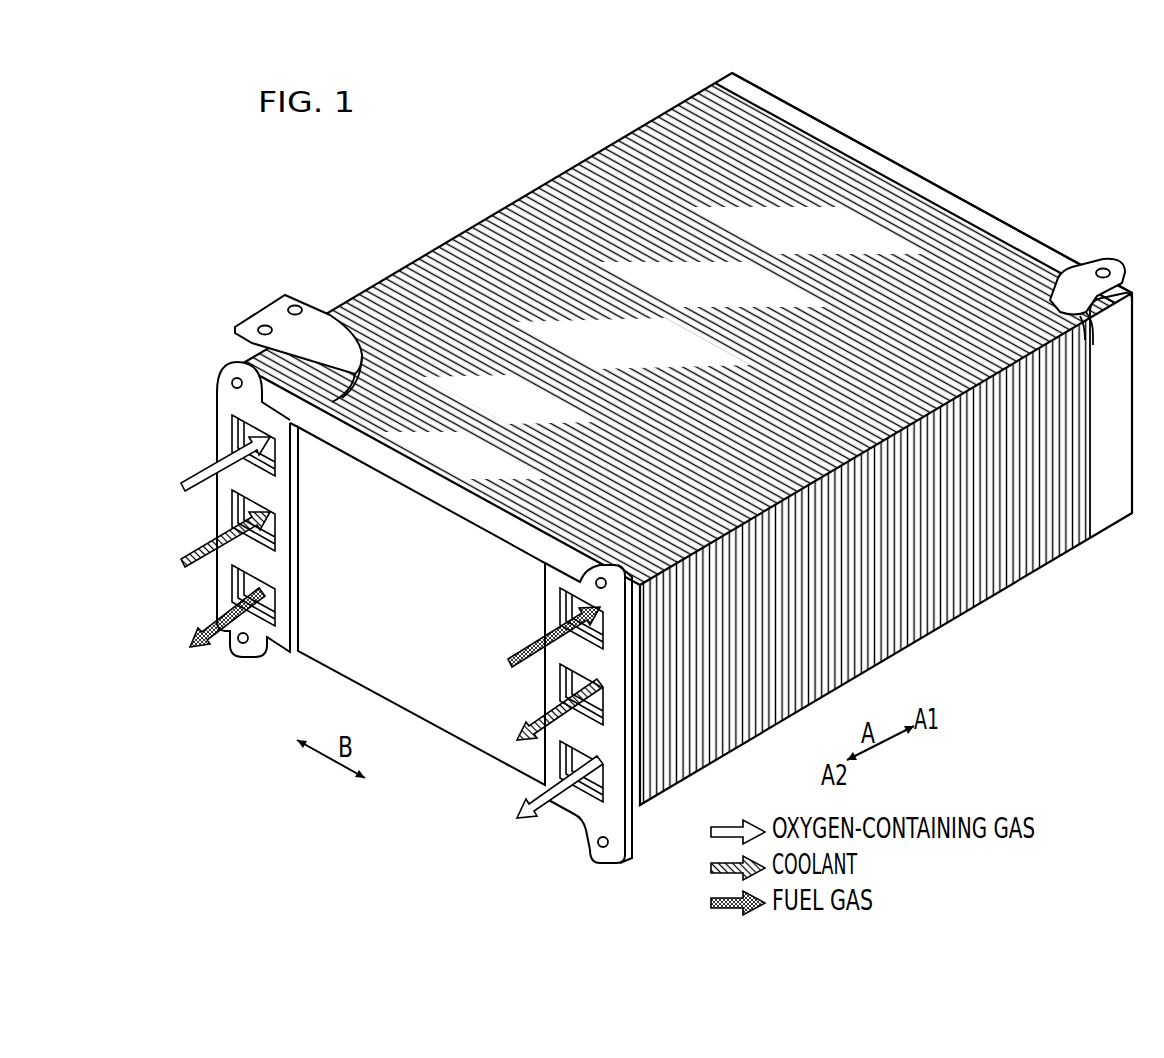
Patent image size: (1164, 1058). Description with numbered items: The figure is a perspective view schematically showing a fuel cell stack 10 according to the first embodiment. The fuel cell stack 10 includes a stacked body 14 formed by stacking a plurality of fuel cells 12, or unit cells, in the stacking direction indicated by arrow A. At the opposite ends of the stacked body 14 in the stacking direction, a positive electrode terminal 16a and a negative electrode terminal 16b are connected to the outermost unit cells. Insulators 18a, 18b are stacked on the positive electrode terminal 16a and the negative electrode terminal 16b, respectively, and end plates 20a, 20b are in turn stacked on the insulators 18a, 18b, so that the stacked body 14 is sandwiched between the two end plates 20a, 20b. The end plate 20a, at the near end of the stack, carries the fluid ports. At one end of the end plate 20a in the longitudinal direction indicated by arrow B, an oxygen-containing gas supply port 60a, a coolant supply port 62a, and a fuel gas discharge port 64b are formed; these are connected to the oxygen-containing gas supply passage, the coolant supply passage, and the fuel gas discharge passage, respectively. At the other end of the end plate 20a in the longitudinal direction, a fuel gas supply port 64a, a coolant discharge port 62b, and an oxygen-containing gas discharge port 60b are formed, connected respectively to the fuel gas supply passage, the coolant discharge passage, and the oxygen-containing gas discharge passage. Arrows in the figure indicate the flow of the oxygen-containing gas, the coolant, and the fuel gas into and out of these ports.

The fuel cell stack 10 is at (197, 214).
The fuel cell 12 is at (493, 212).
The stacked body 14 is at (413, 160).
The positive electrode terminal 16a is at (260, 320).
The negative electrode terminal 16b is at (1084, 290).
The insulator 18a is at (395, 457).
The insulator 18b is at (985, 248).
The end plate 20a is at (457, 727).
The end plate 20b is at (903, 137).
The oxygen-containing gas supply port 60a is at (231, 443).
The oxygen-containing gas discharge port 60b is at (583, 788).
The coolant supply port 62a is at (233, 517).
The coolant discharge port 62b is at (561, 685).
The fuel gas supply port 64a is at (561, 606).
The fuel gas discharge port 64b is at (240, 595).